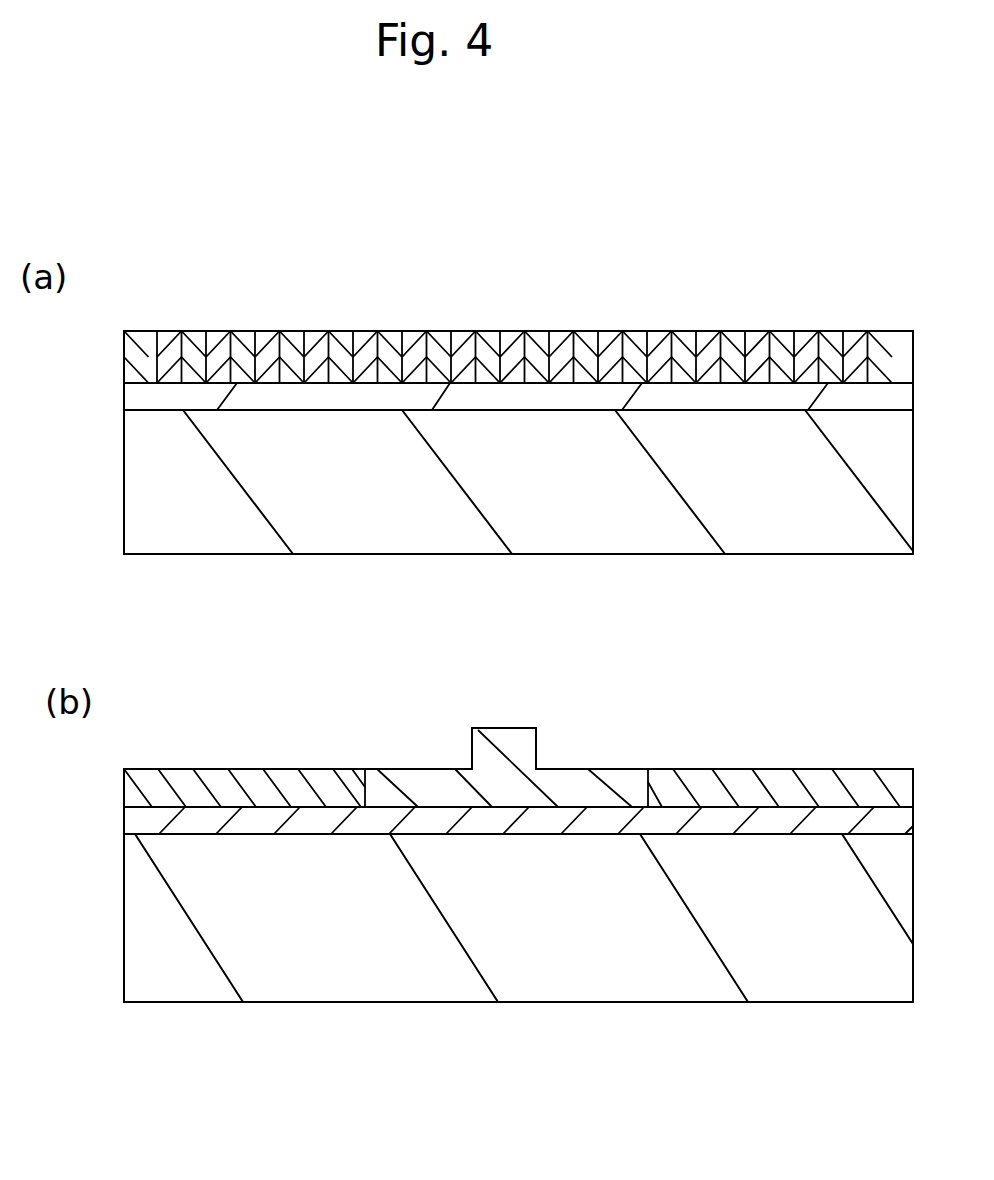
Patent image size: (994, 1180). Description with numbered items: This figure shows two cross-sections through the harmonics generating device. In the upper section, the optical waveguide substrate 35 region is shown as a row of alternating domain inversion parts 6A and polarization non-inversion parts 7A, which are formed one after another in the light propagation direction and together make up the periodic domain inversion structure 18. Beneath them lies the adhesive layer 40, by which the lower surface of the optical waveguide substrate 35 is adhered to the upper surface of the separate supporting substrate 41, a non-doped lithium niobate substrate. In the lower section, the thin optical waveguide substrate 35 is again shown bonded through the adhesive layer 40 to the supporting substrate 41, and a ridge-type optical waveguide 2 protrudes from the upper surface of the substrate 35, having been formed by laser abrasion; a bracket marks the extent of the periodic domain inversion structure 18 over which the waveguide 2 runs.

The domain inversion parts 6A is at (218, 332).
The polarization non-inversion parts 7A is at (297, 347).
The adhesive layer 40 is at (135, 396).
The supporting substrate 41 is at (130, 490).
The optical waveguide substrate 35 is at (143, 783).
The ridge-type optical waveguide 2 is at (528, 743).
The periodic domain inversion structure 18 is at (638, 703).